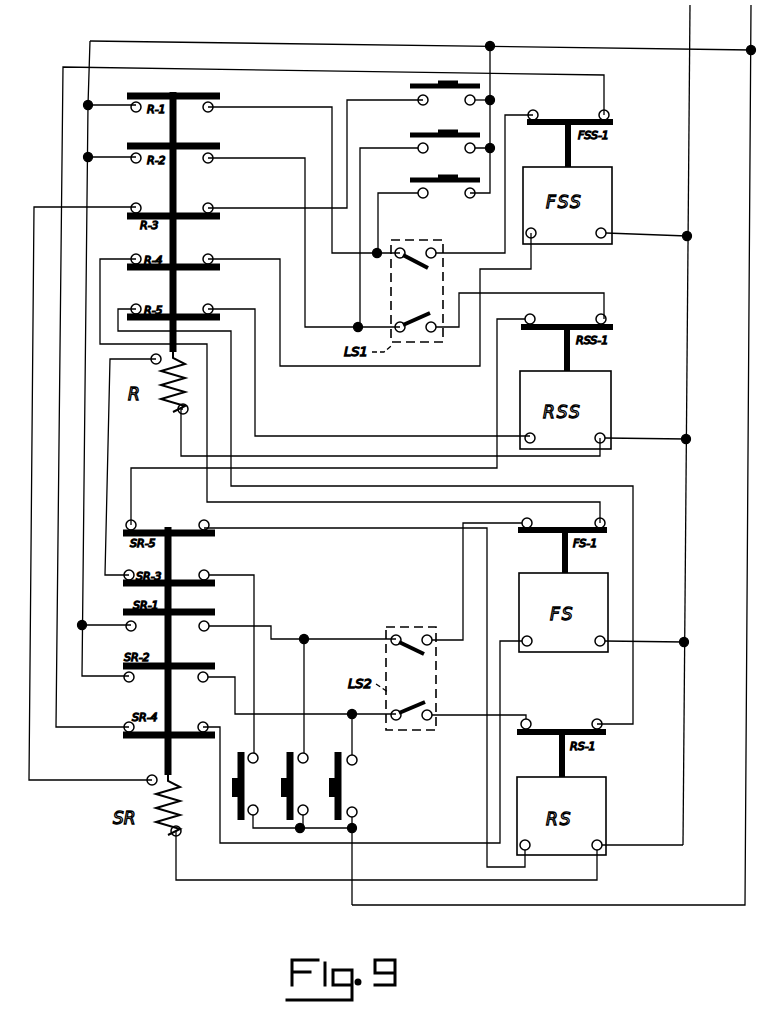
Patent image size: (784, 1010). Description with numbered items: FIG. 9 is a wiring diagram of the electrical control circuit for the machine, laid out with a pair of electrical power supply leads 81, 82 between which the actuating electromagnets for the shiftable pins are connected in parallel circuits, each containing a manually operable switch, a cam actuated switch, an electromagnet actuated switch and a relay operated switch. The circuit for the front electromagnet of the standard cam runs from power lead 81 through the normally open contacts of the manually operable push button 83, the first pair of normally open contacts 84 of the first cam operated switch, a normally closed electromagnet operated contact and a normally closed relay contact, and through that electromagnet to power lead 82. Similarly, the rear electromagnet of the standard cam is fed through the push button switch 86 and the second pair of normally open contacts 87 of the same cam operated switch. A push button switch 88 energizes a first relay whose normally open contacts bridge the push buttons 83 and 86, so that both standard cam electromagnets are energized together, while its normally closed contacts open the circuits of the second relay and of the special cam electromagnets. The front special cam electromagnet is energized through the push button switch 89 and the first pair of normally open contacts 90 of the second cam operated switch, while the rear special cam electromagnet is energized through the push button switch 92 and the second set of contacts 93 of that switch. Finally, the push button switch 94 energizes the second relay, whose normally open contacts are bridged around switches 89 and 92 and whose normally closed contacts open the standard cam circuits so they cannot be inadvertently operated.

The electrical power supply lead 81 is at (749, 30).
The electrical power supply lead 82 is at (690, 30).
The manually operable push button 83 is at (410, 178).
The normally open contacts of cam operated switch LS1 84 is at (428, 269).
The manually operable push button switch 86 is at (420, 130).
The second pair of normally open contacts of cam operated switch LS1 87 is at (429, 314).
The push button switch 88 is at (270, 790).
The manually operable push button switch 89 is at (287, 773).
The normally open contacts of cam operated switch LS2 90 is at (426, 662).
The manually operable push button switch 92 is at (338, 773).
The second set of contacts of cam operated switch LS2 93 is at (426, 700).
The manually operable push button switch 94 is at (406, 88).